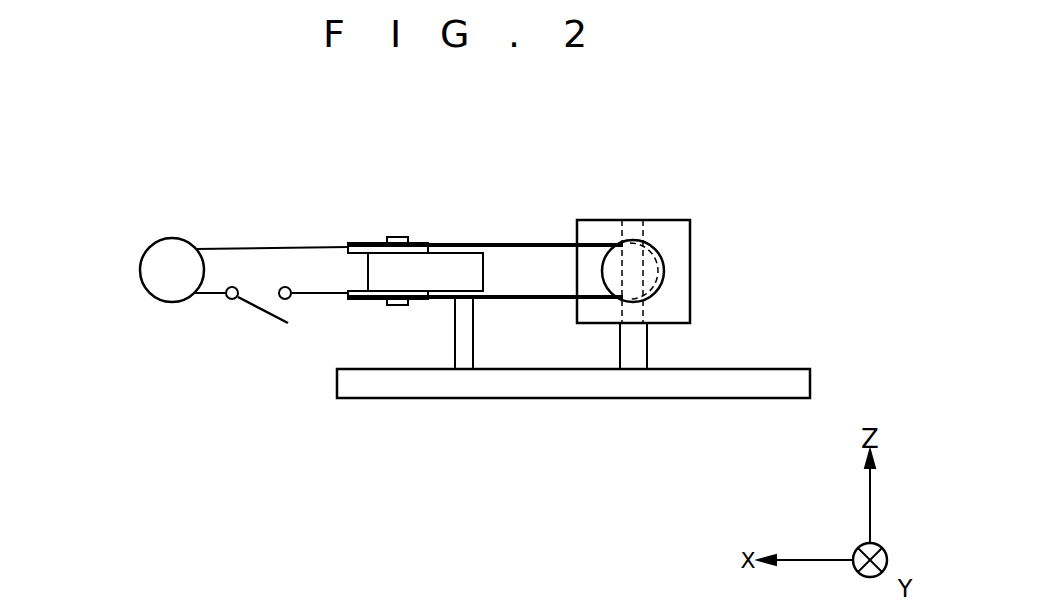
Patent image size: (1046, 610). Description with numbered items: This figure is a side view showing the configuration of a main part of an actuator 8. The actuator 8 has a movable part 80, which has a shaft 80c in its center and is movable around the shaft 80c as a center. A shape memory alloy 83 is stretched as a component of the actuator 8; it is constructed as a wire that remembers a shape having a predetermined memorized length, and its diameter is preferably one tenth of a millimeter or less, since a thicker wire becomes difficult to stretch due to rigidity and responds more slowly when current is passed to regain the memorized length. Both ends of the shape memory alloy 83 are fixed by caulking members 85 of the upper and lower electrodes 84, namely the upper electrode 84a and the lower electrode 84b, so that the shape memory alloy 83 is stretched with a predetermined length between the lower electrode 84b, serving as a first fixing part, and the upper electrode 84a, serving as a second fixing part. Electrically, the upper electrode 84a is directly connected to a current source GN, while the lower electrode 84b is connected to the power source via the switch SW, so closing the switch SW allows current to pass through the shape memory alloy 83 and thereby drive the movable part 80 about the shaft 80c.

The actuator 8 is at (113, 195).
The movable part 80 is at (670, 220).
The shaft 80c is at (630, 218).
The shape memory alloy 83 is at (522, 243).
The electrodes 84 is at (283, 157).
The upper electrode 84a is at (347, 242).
The lower electrode 84b is at (383, 285).
The caulking members 85 is at (397, 237).
The current source GN is at (170, 302).
The switch SW is at (256, 316).